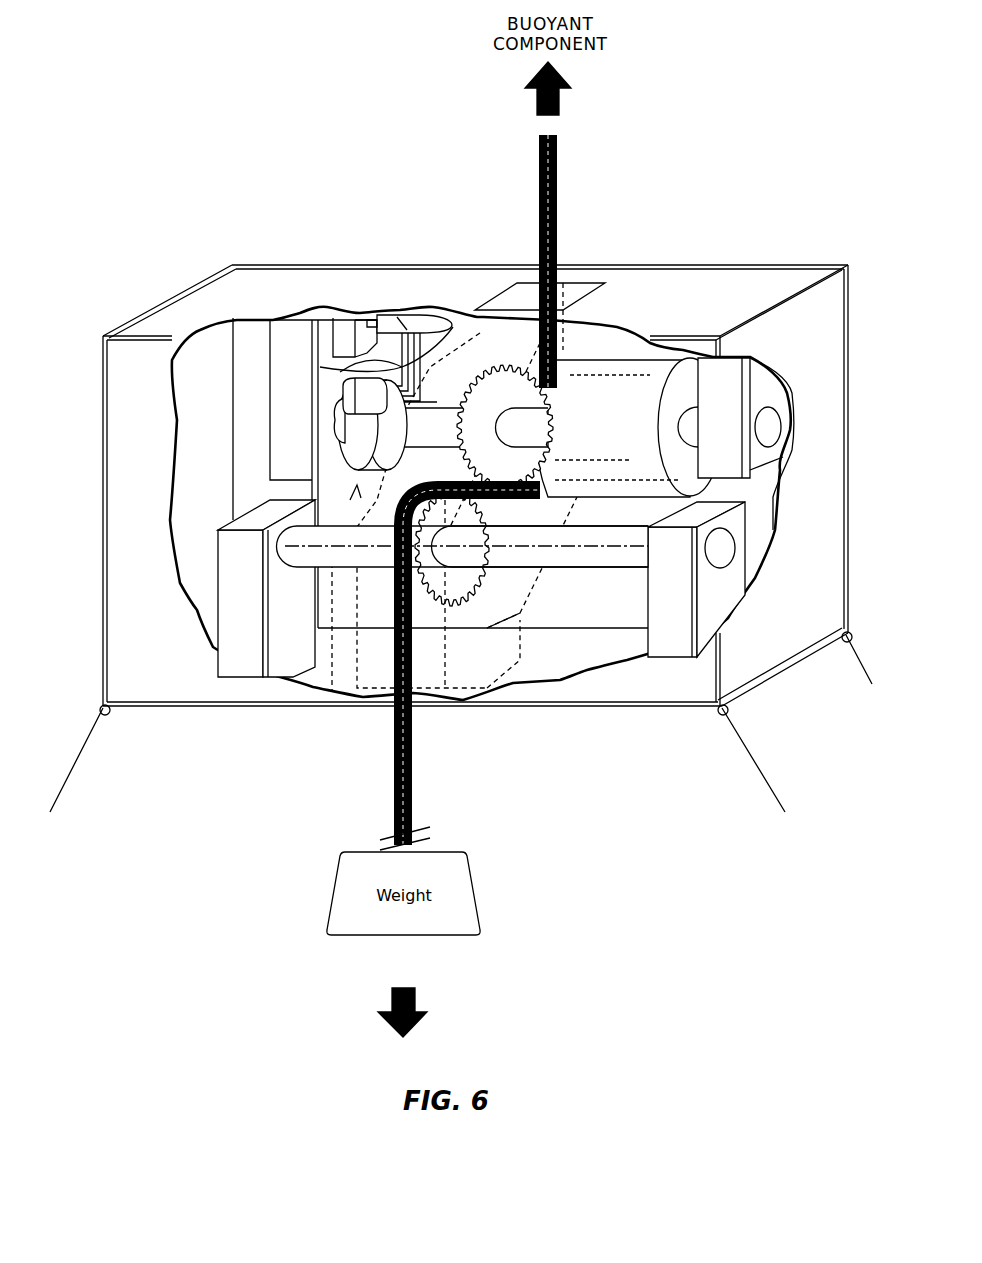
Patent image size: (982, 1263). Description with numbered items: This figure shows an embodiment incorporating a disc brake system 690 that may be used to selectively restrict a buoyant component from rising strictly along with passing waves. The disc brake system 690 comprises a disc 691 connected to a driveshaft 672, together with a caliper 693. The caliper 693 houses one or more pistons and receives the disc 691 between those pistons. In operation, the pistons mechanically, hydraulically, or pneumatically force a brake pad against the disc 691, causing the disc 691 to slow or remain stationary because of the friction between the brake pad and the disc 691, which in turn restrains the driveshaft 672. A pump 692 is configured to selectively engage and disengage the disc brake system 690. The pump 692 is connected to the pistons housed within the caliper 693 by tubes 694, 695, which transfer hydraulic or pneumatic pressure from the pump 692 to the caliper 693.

The disc brake system 690 is at (357, 487).
The disc 691 is at (357, 453).
The driveshaft 672 is at (340, 430).
The caliper 693 is at (347, 393).
The tube 694 is at (320, 366).
The pump 692 is at (393, 316).
The tube 695 is at (462, 320).